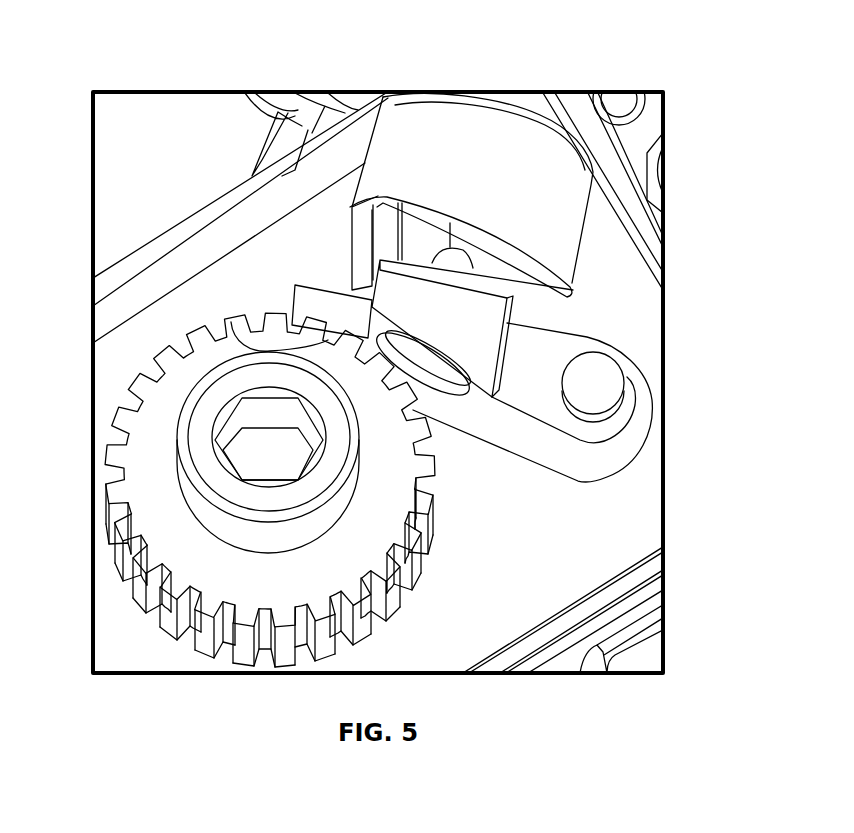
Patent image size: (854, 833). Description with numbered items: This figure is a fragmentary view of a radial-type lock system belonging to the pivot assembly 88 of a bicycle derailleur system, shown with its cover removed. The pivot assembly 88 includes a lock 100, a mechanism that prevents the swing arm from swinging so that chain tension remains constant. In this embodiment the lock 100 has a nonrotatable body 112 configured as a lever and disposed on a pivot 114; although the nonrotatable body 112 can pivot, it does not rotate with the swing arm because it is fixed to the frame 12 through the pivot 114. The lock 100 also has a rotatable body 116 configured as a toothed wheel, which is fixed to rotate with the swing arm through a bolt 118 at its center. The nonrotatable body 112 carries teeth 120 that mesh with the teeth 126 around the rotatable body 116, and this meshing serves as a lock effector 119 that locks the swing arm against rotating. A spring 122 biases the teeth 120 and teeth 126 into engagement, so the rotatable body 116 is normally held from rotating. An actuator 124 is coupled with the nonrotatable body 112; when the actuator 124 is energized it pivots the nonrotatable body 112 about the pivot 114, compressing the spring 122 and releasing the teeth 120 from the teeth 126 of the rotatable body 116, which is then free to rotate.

The frame 12 is at (655, 115).
The pivot assembly 88 is at (146, 60).
The lock 100 is at (495, 483).
The nonrotatable body 112 is at (632, 457).
The pivot 114 is at (593, 384).
The rotatable body 116 is at (290, 600).
The bolt 118 is at (270, 488).
The lock effector 119 is at (285, 304).
The teeth 120 is at (231, 322).
The spring 122 is at (540, 265).
The actuator 124 is at (553, 147).
The teeth 126 is at (118, 415).